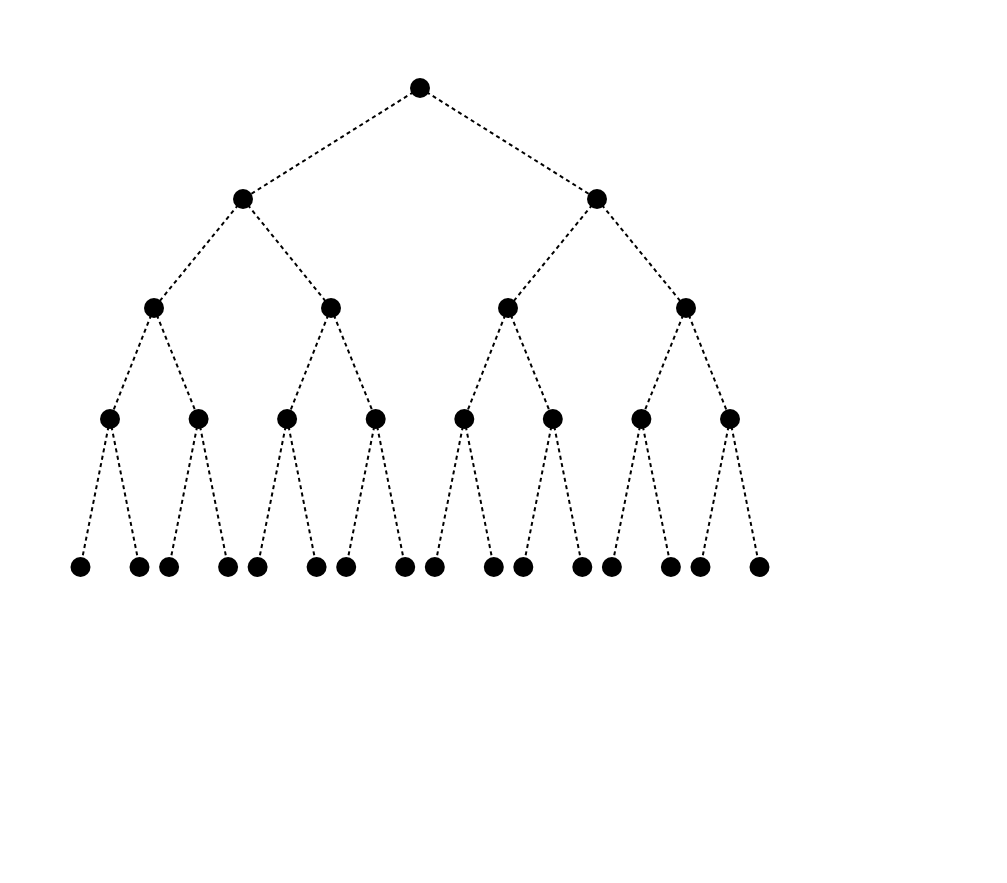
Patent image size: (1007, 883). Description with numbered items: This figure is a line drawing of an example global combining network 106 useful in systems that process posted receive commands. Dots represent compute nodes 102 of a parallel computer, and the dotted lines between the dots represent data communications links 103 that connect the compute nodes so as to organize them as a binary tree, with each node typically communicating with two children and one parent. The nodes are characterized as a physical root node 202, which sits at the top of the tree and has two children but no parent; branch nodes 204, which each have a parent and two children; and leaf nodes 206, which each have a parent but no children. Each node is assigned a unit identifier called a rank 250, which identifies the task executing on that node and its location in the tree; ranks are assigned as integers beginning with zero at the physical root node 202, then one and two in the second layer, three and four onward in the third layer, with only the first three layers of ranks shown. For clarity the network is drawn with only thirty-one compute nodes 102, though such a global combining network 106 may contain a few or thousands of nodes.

The global combining network 106 is at (210, 665).
The data communications links 103 is at (340, 140).
The compute nodes 102 is at (481, 409).
The physical root node 202 is at (438, 80).
The branch nodes 204 is at (782, 148).
The leaf nodes 206 is at (490, 573).
The rank 250 is at (562, 208).